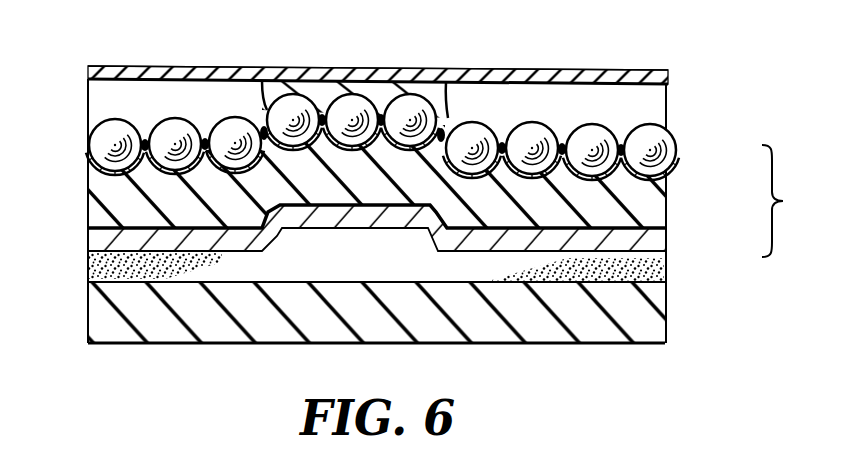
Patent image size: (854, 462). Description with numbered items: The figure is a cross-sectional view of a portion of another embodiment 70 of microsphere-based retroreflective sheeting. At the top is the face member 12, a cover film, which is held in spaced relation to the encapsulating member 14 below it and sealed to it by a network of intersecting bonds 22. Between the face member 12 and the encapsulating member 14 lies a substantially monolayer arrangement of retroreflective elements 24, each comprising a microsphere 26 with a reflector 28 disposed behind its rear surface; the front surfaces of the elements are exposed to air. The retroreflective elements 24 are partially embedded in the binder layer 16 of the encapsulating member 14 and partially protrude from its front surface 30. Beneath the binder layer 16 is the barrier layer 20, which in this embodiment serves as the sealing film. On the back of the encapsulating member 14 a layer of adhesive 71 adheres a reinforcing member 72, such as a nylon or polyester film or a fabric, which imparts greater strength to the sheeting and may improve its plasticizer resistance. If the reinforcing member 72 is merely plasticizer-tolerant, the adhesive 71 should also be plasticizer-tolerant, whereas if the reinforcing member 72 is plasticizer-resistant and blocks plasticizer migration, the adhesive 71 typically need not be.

The face member 12 is at (651, 70).
The encapsulating member 14 is at (800, 201).
The binder layer 16 is at (656, 202).
The barrier layer 20 is at (648, 243).
The network of intersecting bonds 22 is at (383, 92).
The retroreflective elements 24 is at (86, 124).
The microspheres 26 is at (518, 122).
The reflectors 28 is at (664, 180).
The front surface 30 is at (205, 138).
The sheeting embodiment 70 is at (580, 52).
The adhesive 71 is at (658, 273).
The reinforcing member 72 is at (646, 332).